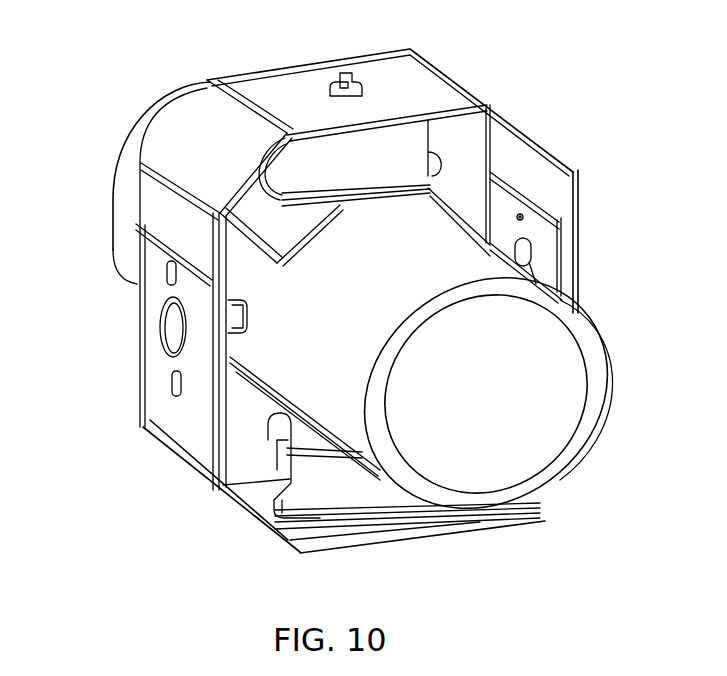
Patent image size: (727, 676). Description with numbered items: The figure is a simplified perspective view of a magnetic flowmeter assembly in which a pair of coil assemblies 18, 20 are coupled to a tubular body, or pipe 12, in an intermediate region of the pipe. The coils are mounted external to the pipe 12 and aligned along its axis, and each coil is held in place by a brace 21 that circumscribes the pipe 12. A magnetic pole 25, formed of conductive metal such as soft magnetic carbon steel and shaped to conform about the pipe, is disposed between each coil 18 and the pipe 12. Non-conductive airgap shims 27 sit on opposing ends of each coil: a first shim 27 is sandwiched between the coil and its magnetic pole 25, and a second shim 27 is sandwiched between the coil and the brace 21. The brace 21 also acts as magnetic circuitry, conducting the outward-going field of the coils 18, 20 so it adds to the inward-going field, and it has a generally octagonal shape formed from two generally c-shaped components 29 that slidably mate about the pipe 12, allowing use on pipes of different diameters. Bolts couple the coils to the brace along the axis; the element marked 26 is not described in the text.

The tubular body (pipe) 12 is at (595, 388).
The coil assembly 18 is at (318, 162).
The coil assembly 20 is at (360, 487).
The brace 21 is at (576, 215).
The magnetic pole 25 is at (257, 222).
The tab 26 is at (236, 345).
The airgap shim 27 is at (268, 430).
The c-shaped component 29 is at (183, 157).